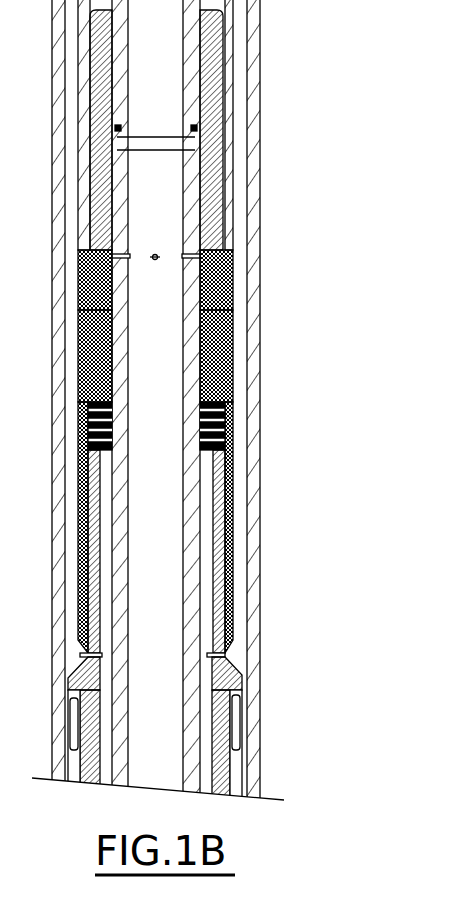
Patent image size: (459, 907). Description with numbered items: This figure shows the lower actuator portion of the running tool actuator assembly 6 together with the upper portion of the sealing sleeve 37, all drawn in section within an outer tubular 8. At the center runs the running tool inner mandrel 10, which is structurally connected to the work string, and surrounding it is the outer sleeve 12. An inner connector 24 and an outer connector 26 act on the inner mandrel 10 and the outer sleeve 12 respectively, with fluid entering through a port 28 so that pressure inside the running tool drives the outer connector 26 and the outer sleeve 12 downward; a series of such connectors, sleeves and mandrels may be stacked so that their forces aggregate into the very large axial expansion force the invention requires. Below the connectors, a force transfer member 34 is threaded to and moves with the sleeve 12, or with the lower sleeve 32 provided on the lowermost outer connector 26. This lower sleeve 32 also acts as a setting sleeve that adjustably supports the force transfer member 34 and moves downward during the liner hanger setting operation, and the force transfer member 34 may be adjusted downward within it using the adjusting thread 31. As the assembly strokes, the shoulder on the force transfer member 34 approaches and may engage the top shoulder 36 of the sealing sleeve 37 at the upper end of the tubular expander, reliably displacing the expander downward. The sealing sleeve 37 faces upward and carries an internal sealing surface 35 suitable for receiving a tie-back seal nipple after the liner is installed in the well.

The running tool actuator assembly 6 is at (323, 407).
The casing 8 is at (262, 193).
The inner mandrel 10 is at (190, 482).
The outer sleeve 12 is at (230, 114).
The inner connector 24 is at (222, 50).
The outer connector 26 is at (222, 340).
The port 28 is at (222, 282).
The adjusting thread 31 is at (233, 517).
The lower sleeve / setting sleeve 32 is at (228, 600).
The force transfer member 34 is at (243, 668).
The internal sealing surface 35 is at (225, 777).
The top shoulder 36 is at (240, 688).
The sealing sleeve 37 is at (237, 745).